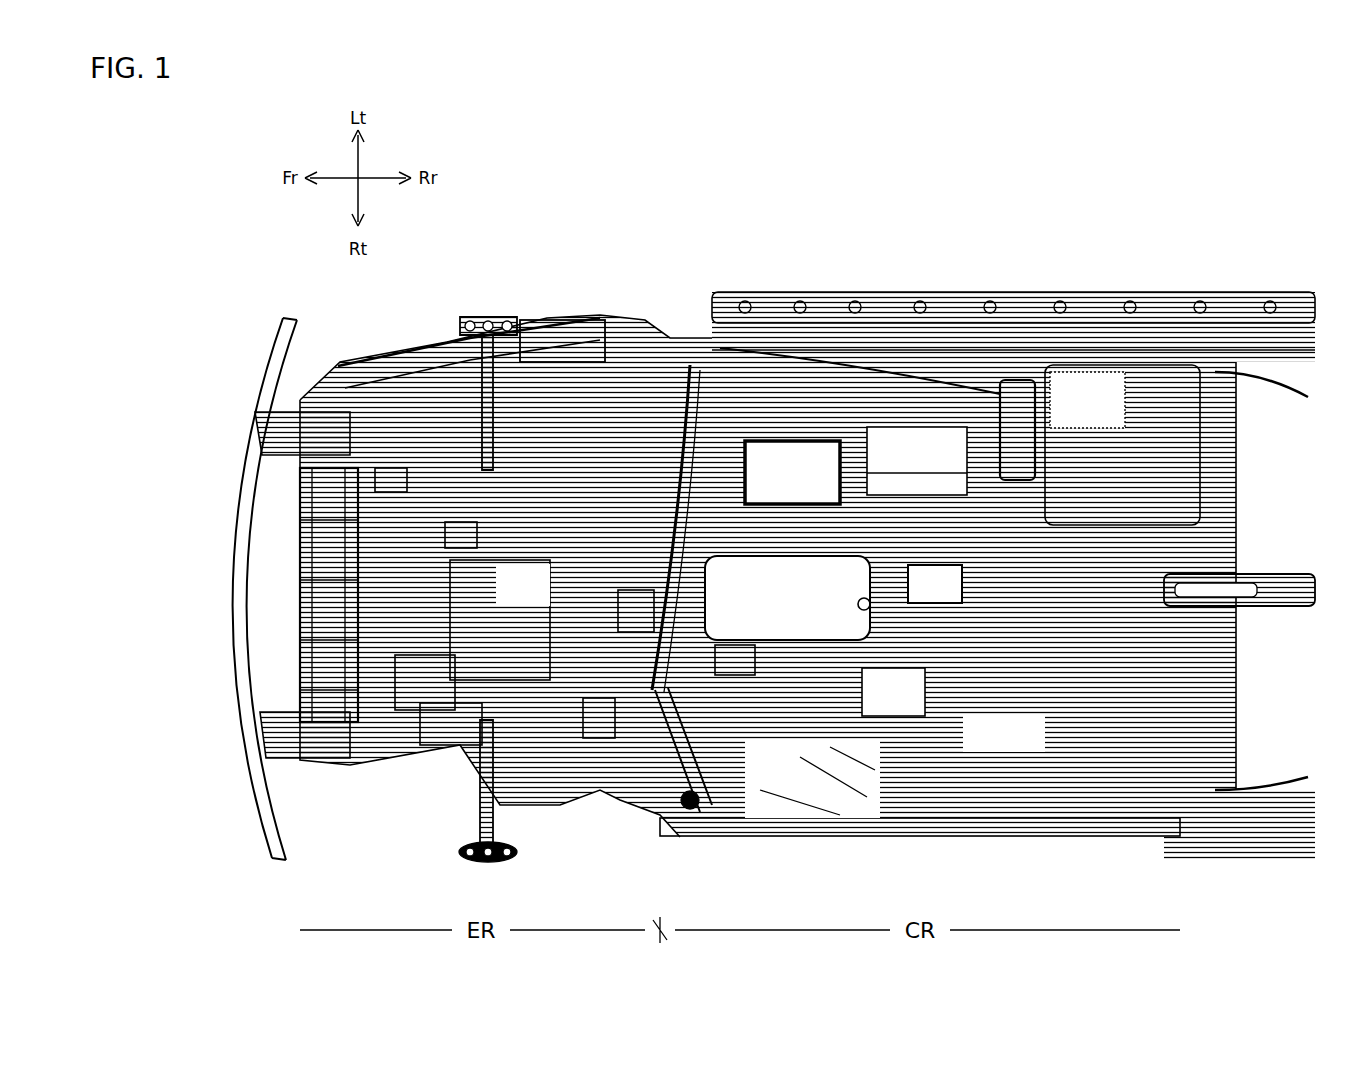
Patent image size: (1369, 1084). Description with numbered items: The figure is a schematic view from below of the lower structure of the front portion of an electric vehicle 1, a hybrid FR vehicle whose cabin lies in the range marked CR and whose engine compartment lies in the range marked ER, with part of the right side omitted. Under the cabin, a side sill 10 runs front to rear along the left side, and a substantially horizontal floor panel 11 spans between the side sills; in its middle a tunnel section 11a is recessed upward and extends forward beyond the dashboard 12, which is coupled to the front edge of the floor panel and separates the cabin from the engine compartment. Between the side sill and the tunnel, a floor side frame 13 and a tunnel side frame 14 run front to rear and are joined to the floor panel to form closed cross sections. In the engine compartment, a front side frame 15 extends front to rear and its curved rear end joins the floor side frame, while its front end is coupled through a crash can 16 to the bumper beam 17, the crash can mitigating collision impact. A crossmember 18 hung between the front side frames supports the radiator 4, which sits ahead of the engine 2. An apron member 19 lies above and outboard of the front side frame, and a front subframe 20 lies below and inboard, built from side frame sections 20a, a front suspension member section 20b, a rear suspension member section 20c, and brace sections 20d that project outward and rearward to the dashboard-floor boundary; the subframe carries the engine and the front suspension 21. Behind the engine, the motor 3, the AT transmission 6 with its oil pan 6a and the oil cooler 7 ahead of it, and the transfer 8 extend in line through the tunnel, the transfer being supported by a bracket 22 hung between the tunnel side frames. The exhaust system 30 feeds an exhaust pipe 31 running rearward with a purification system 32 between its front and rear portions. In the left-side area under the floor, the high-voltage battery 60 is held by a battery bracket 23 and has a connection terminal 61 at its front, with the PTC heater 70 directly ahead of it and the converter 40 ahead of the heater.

The electric vehicle 1 is at (785, 207).
The engine 2 is at (563, 612).
The motor 3 is at (663, 740).
The radiator 4 is at (299, 610).
The AT transmission 6 is at (787, 598).
The oil pan 6a is at (855, 591).
The oil cooler 7 is at (600, 737).
The transfer 8 is at (860, 606).
The side sill 10 is at (900, 298).
The floor panel 11 is at (838, 836).
The tunnel section 11a is at (1004, 733).
The dashboard 12 is at (662, 792).
The floor side frame 13 is at (952, 366).
The tunnel side frame 14 is at (738, 650).
The front side frame 15 is at (415, 425).
The crash can 16 is at (315, 478).
The bumper beam 17 is at (290, 343).
The crossmember 18 is at (386, 482).
The apron member 19 is at (543, 352).
The front subframe 20 is at (559, 539).
The side frame section 20a is at (425, 735).
The front suspension member section 20b is at (450, 533).
The rear suspension member section 20c is at (630, 607).
The brace section 20d is at (688, 362).
The front suspension 21 is at (503, 318).
The bracket 22 is at (919, 599).
The battery bracket 23 is at (1071, 414).
The exhaust system 30 is at (418, 690).
The exhaust pipe 31 is at (767, 712).
The purification system 32 is at (893, 692).
The converter 40 is at (771, 482).
The high-voltage battery 60 is at (1150, 378).
The connection terminal 61 is at (1020, 380).
The PTC heater 70 is at (899, 460).